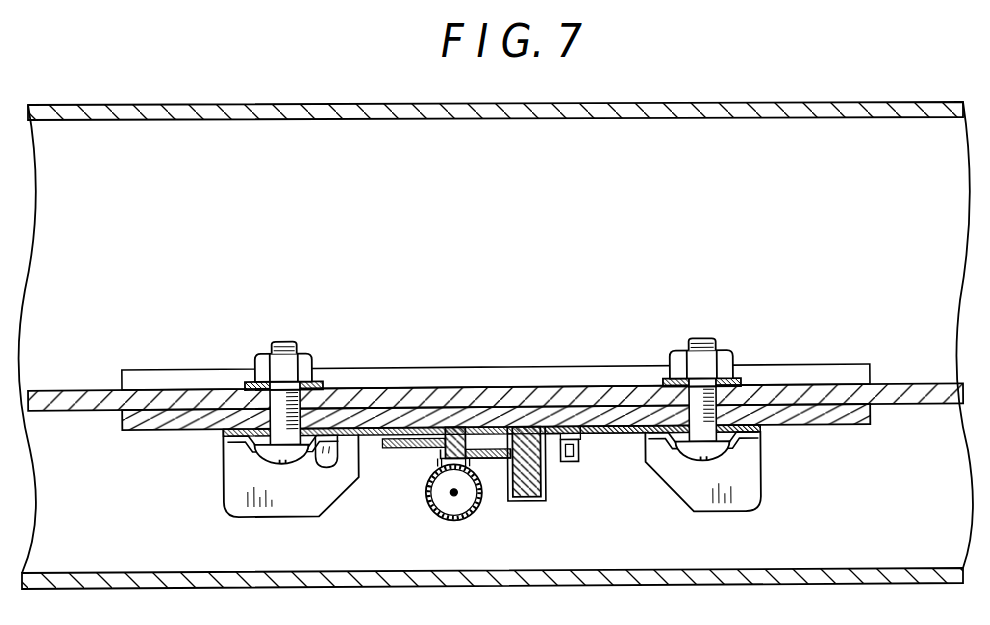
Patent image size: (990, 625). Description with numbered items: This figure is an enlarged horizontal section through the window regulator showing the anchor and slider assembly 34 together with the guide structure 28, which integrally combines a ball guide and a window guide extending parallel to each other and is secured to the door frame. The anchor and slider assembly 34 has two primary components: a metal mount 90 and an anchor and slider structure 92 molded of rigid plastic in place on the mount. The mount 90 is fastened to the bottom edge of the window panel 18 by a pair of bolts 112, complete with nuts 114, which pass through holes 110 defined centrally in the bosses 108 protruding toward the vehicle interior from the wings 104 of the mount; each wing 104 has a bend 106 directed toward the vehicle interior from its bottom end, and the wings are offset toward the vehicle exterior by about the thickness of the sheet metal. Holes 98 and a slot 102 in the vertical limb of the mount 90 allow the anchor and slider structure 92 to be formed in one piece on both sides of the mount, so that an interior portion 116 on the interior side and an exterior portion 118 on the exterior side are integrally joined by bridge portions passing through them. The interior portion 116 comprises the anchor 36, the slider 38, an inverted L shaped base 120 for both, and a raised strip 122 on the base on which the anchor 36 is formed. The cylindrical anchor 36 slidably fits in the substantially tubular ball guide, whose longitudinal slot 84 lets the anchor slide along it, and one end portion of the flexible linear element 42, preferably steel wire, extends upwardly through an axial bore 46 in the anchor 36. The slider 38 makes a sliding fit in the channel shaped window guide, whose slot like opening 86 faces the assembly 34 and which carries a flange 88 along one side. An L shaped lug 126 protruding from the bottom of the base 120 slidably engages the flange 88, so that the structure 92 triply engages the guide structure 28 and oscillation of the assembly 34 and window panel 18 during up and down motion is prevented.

The window panel 18 is at (805, 387).
The guide structure 28 is at (490, 468).
The anchor and slider assembly 34 is at (122, 436).
The anchor 36 is at (435, 528).
The slider 38 is at (535, 503).
The flexible linear element 42 is at (456, 496).
The axial bore 46 is at (447, 521).
The slot 84 is at (437, 470).
The slot like opening 86 is at (548, 462).
The flange 88 is at (578, 442).
The mount 90 is at (215, 440).
The anchor and slider structure 92 is at (396, 451).
The holes 98 is at (510, 430).
The slot 102 is at (447, 430).
The wings 104 is at (250, 436).
The bend 106 is at (235, 495).
The boss 108 is at (326, 468).
The hole 110 is at (262, 447).
The bolts 112 is at (270, 463).
The nuts 114 is at (262, 362).
The interior portion 116 is at (573, 465).
The exterior portion 118 is at (545, 430).
The inverted L shaped base 120 is at (477, 430).
The raised strip 122 is at (432, 516).
The L shaped lug 126 is at (580, 457).